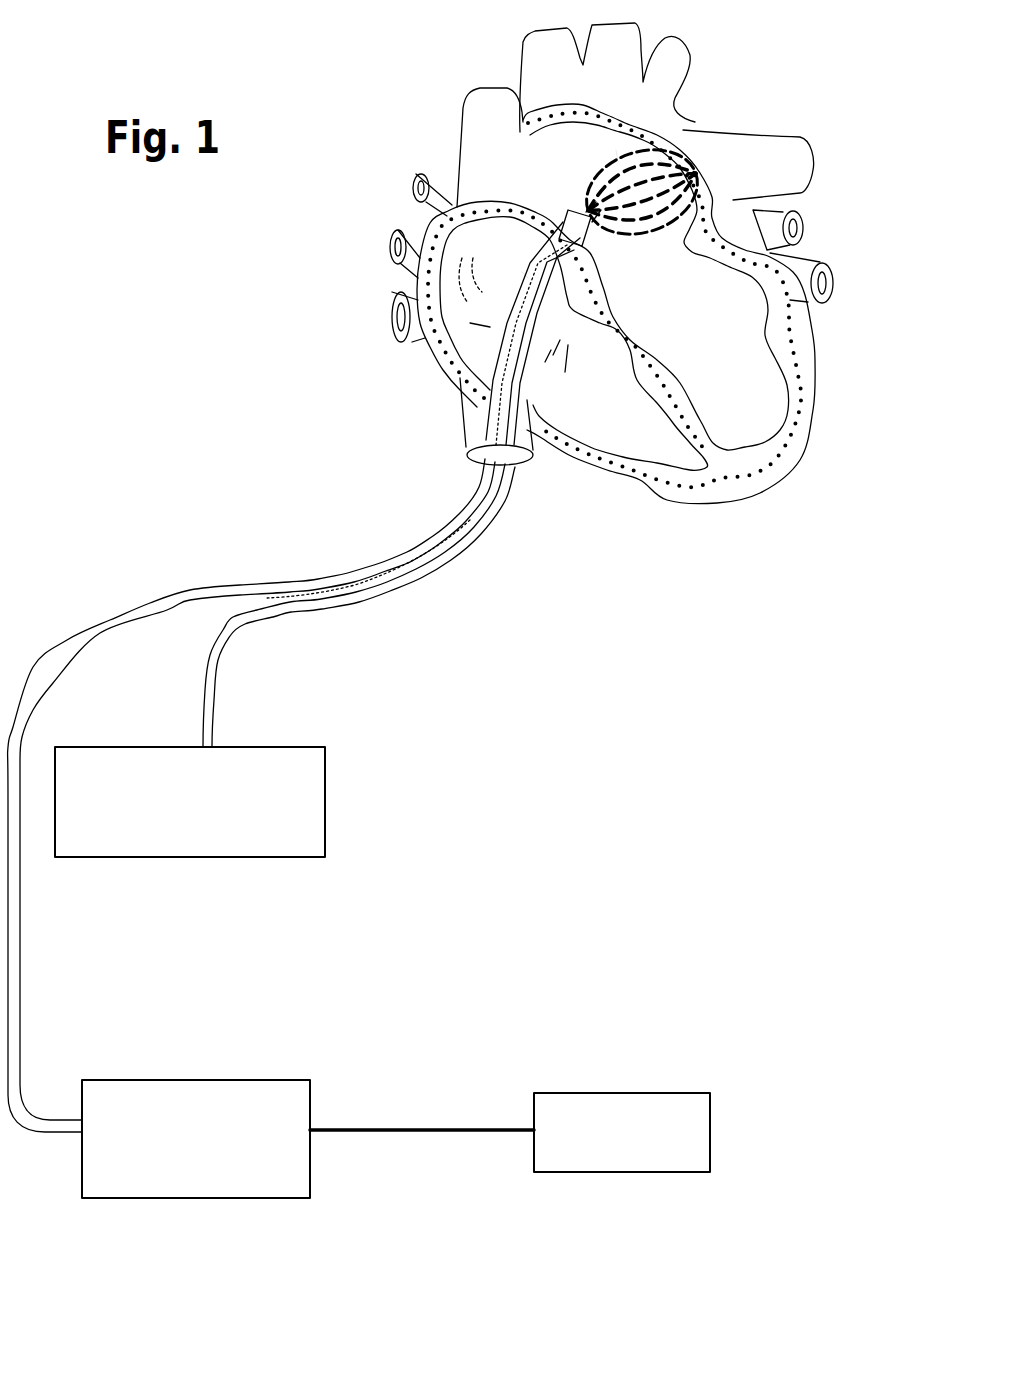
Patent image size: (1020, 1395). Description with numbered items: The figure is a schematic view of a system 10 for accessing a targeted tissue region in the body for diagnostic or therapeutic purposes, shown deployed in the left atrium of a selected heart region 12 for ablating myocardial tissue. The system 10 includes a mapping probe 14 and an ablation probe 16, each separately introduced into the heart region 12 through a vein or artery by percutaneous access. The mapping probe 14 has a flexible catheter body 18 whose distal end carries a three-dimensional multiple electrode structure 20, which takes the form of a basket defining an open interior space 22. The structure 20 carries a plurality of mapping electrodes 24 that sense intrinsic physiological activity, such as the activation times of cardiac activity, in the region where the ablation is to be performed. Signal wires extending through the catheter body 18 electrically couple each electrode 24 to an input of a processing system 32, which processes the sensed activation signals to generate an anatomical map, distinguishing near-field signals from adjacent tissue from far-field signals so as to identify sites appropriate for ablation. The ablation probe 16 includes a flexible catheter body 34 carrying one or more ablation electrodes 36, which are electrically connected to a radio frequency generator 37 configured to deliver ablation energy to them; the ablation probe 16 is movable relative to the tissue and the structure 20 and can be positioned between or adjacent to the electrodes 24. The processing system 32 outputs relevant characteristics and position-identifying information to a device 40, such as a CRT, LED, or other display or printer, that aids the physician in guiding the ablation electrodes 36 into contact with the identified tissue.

The system 10 is at (503, 712).
The heart region 12 is at (730, 330).
The mapping probe 14 is at (500, 319).
The ablation probe 16 is at (593, 250).
The catheter body 18 is at (522, 272).
The multiple electrode structure 20 is at (710, 170).
The open interior space 22 is at (618, 160).
The mapping electrodes 24 is at (596, 172).
The processing system 32 is at (228, 1080).
The catheter body 34 is at (540, 360).
The ablation electrodes 36 is at (665, 165).
The radio frequency generator 37 is at (175, 857).
The device 40 is at (645, 1093).